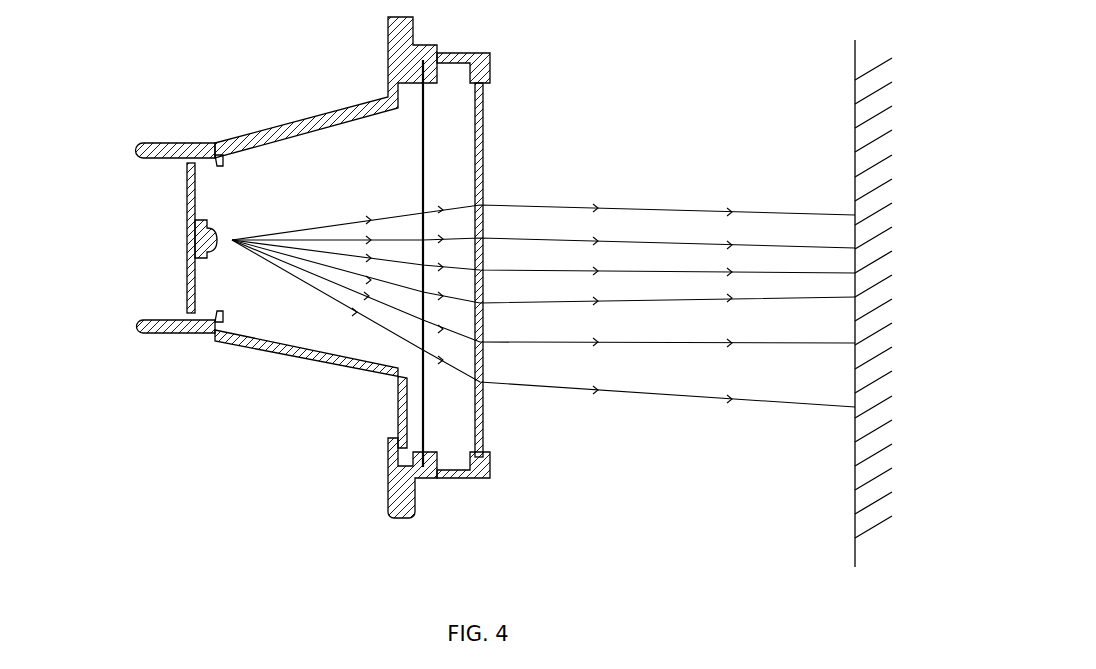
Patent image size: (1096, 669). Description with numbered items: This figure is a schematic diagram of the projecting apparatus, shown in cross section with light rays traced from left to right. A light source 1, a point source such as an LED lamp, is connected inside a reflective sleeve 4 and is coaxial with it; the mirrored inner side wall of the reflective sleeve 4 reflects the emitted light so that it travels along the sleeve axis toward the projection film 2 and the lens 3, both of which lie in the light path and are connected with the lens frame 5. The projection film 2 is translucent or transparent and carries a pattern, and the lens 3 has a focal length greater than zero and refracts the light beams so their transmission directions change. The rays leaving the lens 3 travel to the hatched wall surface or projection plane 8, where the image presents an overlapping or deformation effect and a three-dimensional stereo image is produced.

The light source 1 is at (186, 225).
The projection film 2 is at (420, 165).
The lens 3 is at (482, 158).
The reflective sleeve 4 is at (278, 350).
The lens frame 5 is at (390, 465).
The projection plane 8 is at (853, 163).